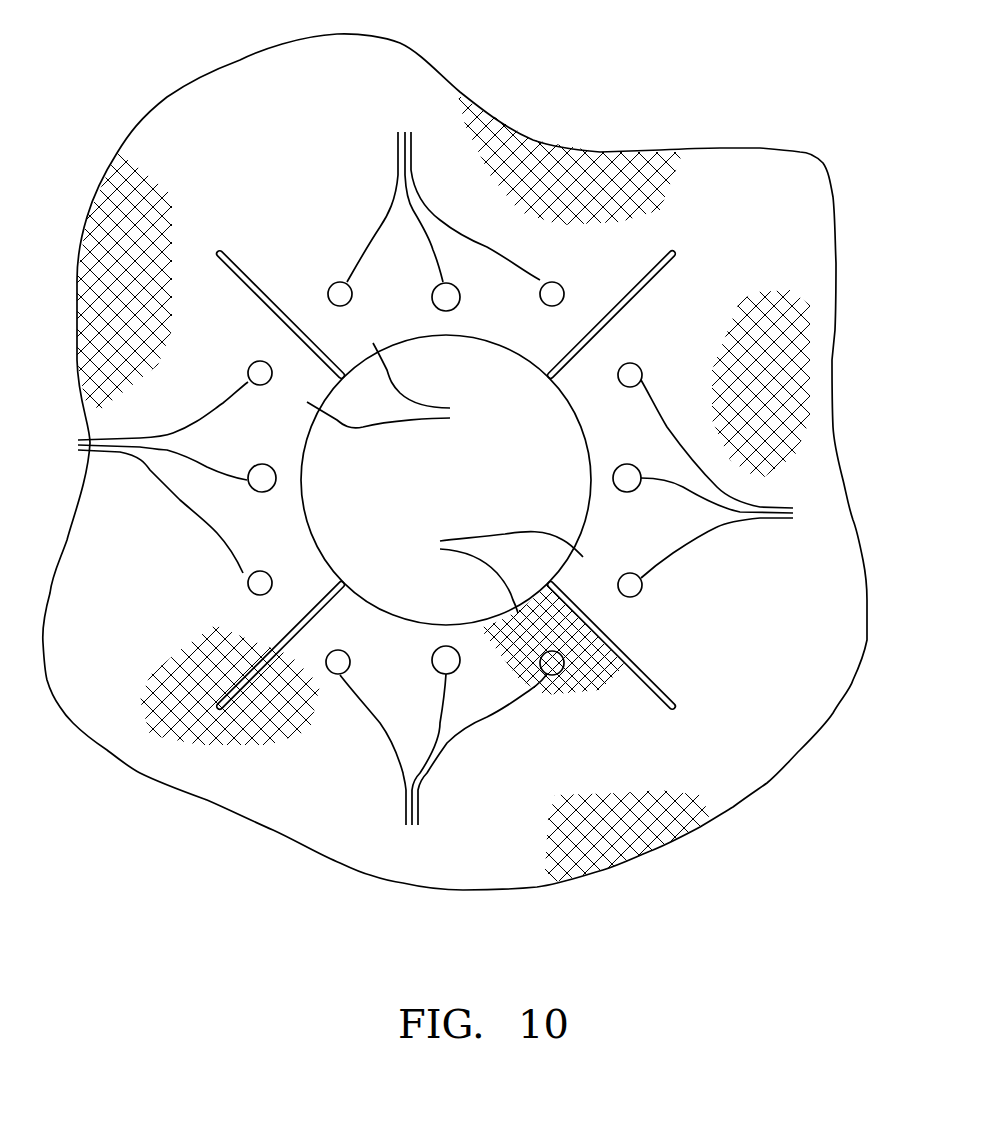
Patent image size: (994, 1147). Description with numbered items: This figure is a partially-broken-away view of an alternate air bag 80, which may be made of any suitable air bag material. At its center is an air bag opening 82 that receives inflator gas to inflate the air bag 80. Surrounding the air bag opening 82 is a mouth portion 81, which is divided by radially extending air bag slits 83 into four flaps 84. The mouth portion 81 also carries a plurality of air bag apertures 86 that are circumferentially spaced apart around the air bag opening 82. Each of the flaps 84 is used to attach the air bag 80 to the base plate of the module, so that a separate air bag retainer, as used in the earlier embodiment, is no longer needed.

The air bag 80 is at (735, 148).
The mouth portion 81 is at (453, 193).
The air bag opening 82 is at (424, 492).
The air bag slits 83 is at (243, 275).
The flaps 84 is at (445, 478).
The air bag apertures 86 is at (437, 481).